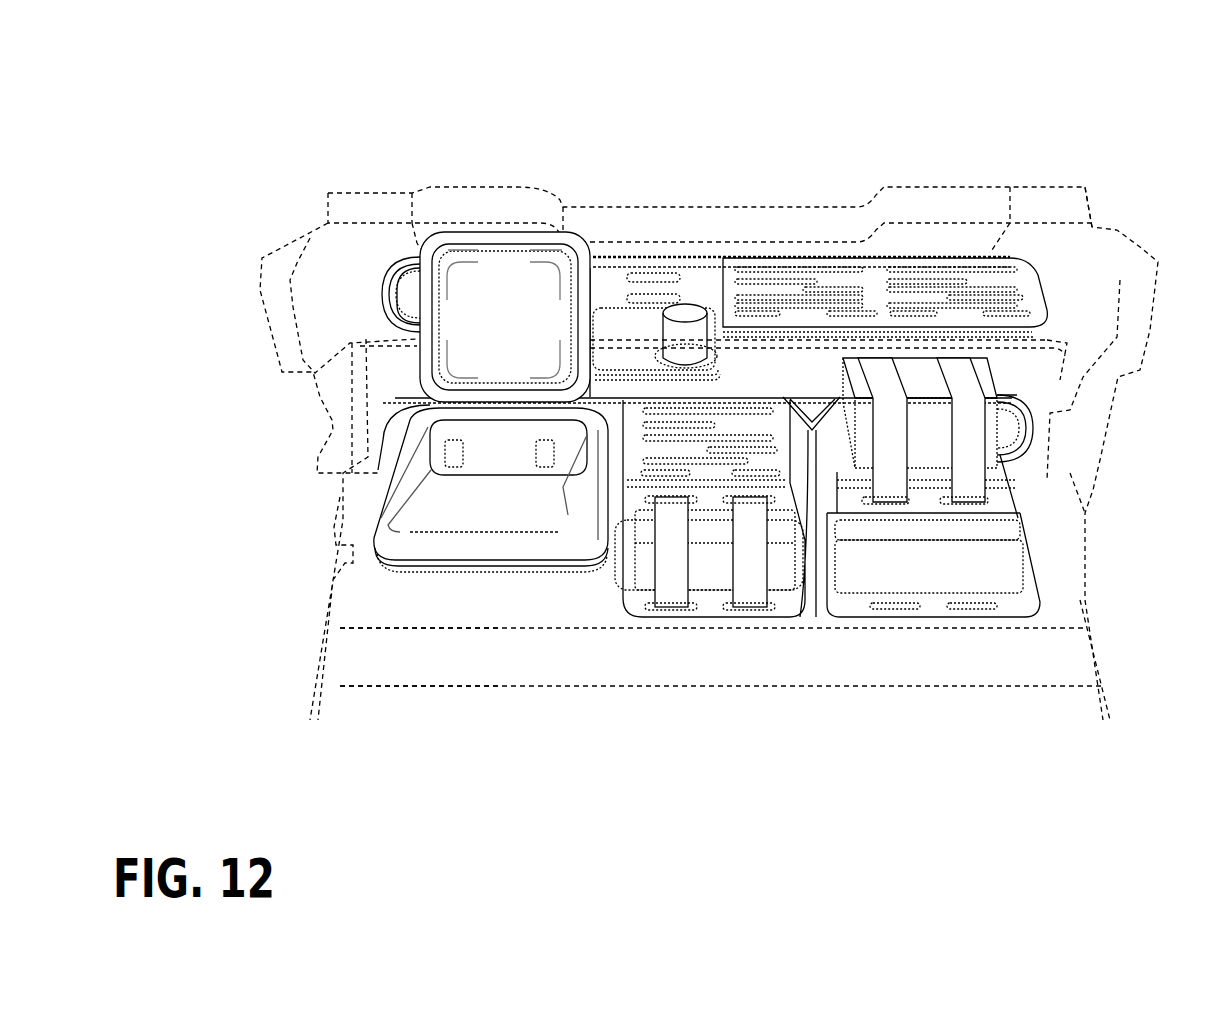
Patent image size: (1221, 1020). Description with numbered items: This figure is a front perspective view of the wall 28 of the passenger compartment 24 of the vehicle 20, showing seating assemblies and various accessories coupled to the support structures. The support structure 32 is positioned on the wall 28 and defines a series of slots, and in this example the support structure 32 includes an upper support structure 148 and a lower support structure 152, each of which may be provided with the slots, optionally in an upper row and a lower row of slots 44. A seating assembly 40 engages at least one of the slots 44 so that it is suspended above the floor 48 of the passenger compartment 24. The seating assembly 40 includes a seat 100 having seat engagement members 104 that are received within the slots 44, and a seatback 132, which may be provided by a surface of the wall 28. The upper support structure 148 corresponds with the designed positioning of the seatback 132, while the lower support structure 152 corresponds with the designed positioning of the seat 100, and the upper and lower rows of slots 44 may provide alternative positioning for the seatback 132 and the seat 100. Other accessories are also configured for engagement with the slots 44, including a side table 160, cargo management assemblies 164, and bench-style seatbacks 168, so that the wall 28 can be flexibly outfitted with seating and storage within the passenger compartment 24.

The vehicle 20 is at (273, 120).
The passenger compartment 24 is at (353, 646).
The wall 28 is at (1050, 277).
The support structure 32 is at (383, 308).
The seating assembly 40 is at (498, 229).
The slot 44 is at (665, 270).
The floor 48 is at (380, 588).
The seat 100 is at (513, 524).
The seat engagement member 104 is at (453, 470).
The seatback 132 is at (524, 331).
The upper support structure 148 is at (607, 252).
The lower support structure 152 is at (1025, 466).
The side table 160 is at (623, 327).
The cargo management assembly 164 is at (875, 624).
The bench-style seatback 168 is at (840, 280).